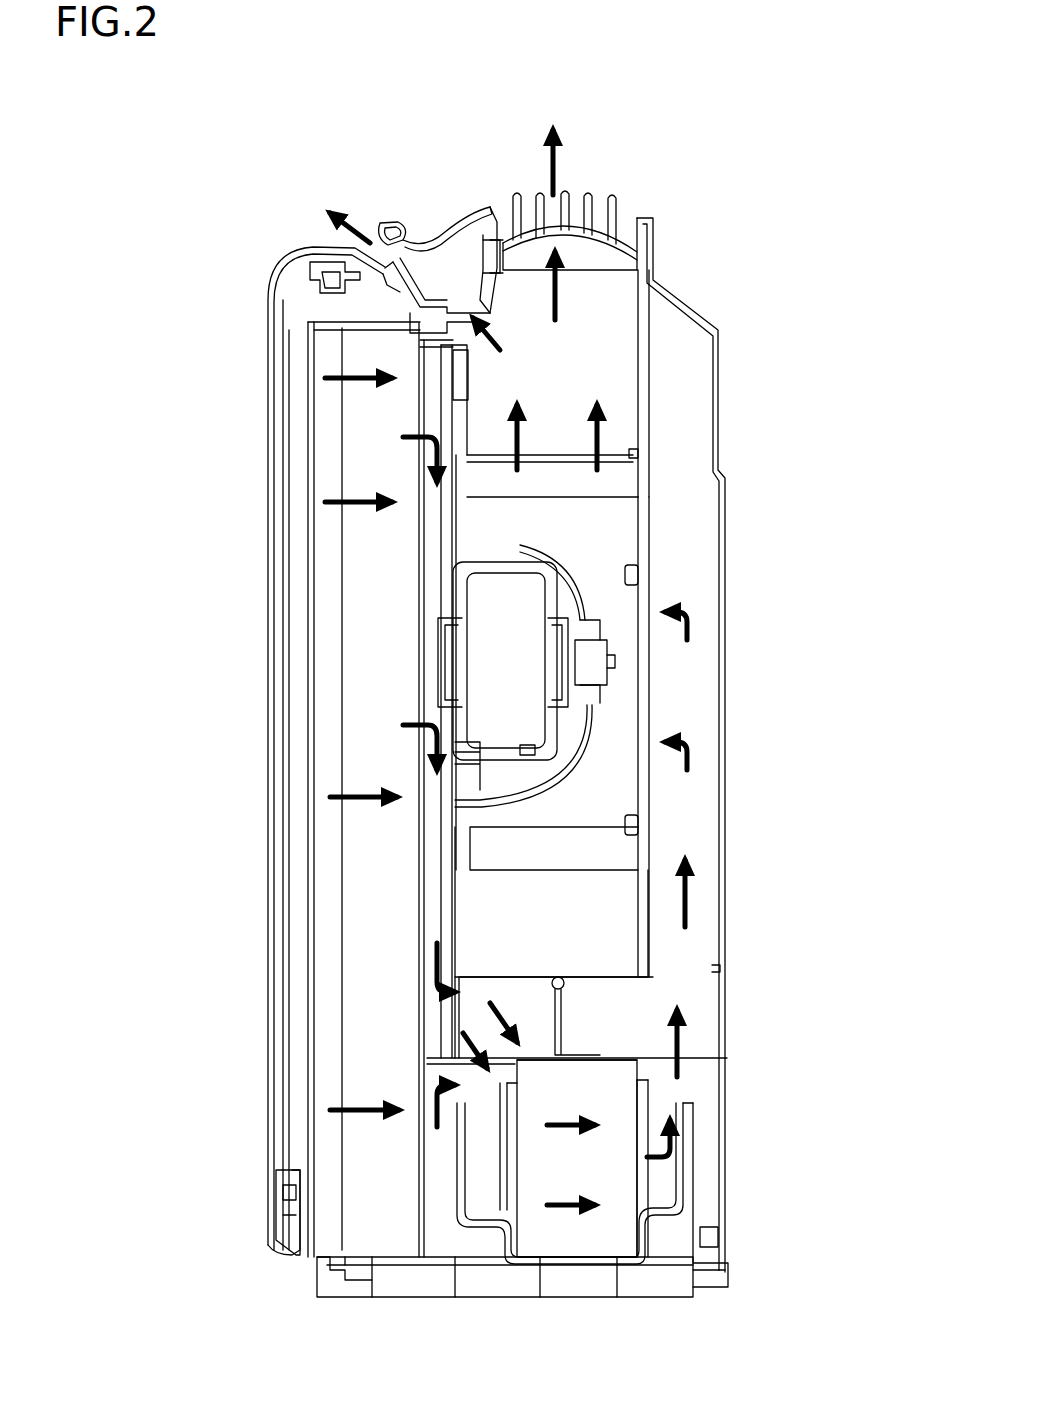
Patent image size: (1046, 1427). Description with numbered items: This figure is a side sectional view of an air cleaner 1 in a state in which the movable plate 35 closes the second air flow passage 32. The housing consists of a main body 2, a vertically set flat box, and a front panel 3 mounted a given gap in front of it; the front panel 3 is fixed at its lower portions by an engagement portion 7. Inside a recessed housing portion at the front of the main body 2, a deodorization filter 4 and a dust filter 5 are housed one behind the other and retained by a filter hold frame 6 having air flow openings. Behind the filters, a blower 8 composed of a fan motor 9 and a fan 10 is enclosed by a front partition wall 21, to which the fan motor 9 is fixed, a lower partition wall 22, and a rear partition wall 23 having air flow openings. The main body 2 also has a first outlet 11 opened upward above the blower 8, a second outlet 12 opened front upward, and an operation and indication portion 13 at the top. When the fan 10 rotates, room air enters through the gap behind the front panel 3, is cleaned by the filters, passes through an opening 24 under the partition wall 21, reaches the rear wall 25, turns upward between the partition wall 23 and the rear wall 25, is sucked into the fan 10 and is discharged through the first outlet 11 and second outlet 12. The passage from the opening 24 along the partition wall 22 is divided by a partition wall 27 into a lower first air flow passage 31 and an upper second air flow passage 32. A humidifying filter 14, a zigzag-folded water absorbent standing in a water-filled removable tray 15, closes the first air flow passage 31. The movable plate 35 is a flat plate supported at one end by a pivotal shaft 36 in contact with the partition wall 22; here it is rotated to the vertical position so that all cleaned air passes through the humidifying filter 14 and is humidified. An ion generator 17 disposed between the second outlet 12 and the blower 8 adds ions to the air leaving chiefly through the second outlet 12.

The air cleaner 1 is at (248, 203).
The main body 2 is at (698, 305).
The front panel 3 is at (268, 281).
The deodorization filter 4 is at (323, 538).
The dust filter 5 is at (365, 472).
The filter hold frame 6 is at (307, 607).
The engagement portion 7 is at (290, 1202).
The blower 8 is at (614, 445).
The fan motor 9 is at (538, 598).
The fan 10 is at (622, 525).
The first outlet 11 is at (600, 203).
The second outlet 12 is at (378, 243).
The operation and indication portion 13 is at (450, 210).
The humidifying filter 14 is at (615, 1172).
The tray 15 is at (643, 1268).
The ion generator 17 is at (460, 366).
The partition wall 21 is at (450, 903).
The partition wall 22 is at (492, 970).
The partition wall 23 is at (650, 708).
The opening 24 is at (438, 977).
The rear wall 25 is at (720, 803).
The partition wall 27 is at (596, 1068).
The first air flow passage 31 is at (470, 1078).
The second air flow passage 32 is at (470, 1027).
The movable plate 35 is at (565, 1013).
The pivotal shaft 36 is at (558, 976).